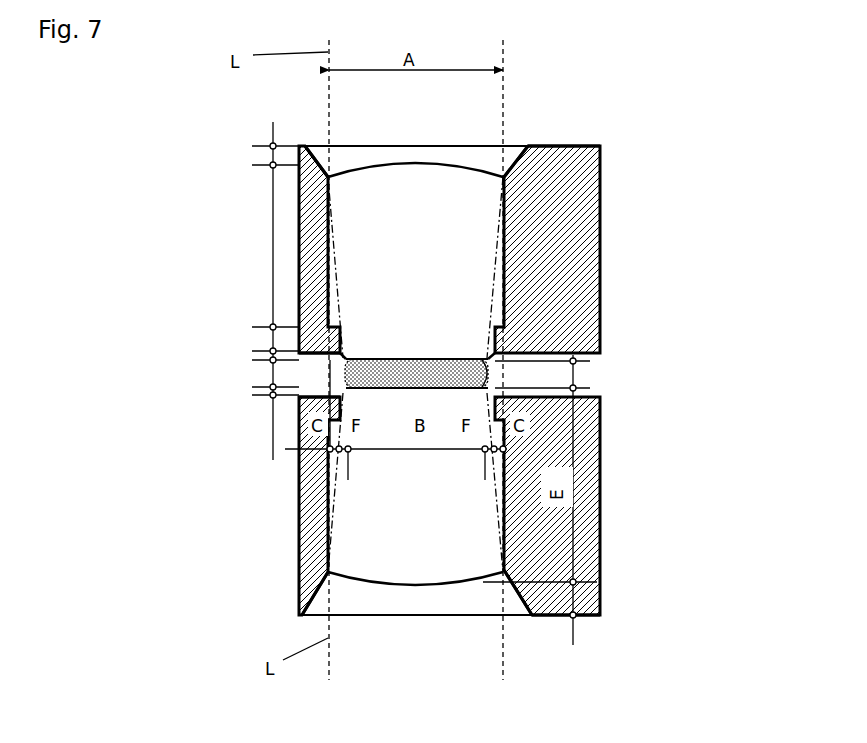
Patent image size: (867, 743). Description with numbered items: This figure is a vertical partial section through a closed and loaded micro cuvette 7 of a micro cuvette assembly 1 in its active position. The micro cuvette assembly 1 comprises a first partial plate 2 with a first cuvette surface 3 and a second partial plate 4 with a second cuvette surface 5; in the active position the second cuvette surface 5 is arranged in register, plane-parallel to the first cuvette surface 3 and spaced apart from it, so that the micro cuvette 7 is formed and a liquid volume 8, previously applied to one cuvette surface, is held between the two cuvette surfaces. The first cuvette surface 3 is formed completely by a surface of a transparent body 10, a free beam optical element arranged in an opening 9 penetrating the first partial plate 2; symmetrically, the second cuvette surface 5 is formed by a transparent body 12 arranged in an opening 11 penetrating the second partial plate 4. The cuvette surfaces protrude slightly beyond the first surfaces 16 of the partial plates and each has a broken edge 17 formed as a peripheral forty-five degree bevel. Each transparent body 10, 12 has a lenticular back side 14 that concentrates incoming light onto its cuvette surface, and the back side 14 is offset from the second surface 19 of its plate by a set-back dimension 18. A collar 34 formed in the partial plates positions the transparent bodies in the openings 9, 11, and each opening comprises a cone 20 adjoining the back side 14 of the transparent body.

The micro cuvette assembly 1 is at (153, 176).
The first partial plate 2 is at (600, 257).
The first cuvette surface 3 is at (440, 356).
The second partial plate 4 is at (306, 523).
The second cuvette surface 5 is at (400, 393).
The micro cuvette 7 is at (428, 384).
The liquid volume 8 is at (484, 385).
The opening 9 is at (428, 157).
The transparent body 10 is at (420, 208).
The opening 11 is at (412, 598).
The transparent body 12 is at (424, 500).
The back side 14 is at (395, 162).
The first surface 16 is at (311, 358).
The broken edge 17 is at (347, 353).
The set-back dimension 18 is at (422, 383).
The second surface 19 is at (544, 143).
The cone 20 is at (318, 162).
The collar 34 is at (344, 350).